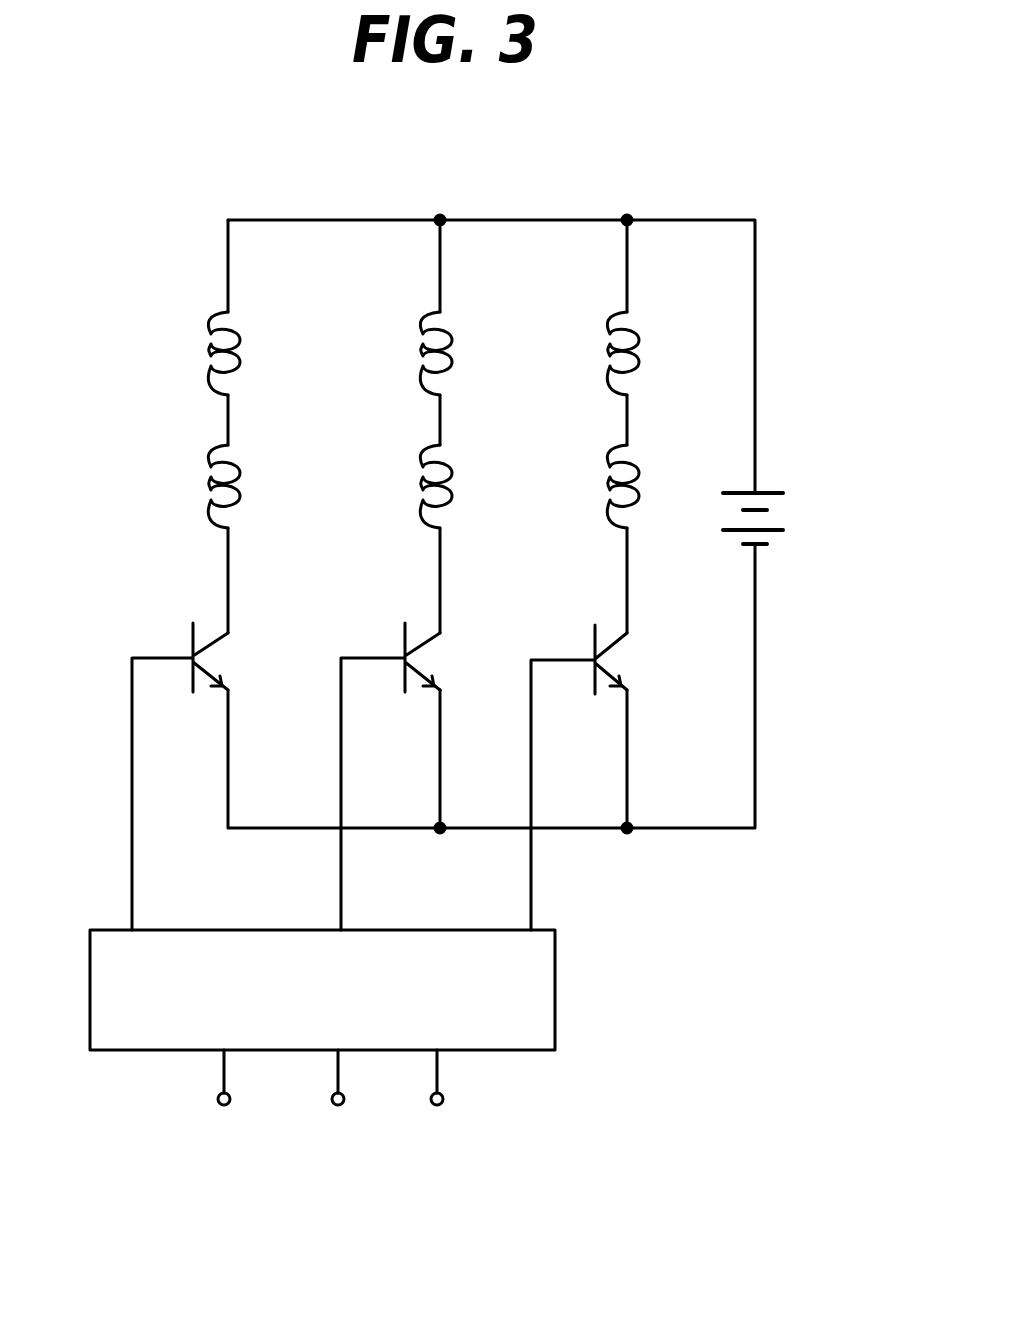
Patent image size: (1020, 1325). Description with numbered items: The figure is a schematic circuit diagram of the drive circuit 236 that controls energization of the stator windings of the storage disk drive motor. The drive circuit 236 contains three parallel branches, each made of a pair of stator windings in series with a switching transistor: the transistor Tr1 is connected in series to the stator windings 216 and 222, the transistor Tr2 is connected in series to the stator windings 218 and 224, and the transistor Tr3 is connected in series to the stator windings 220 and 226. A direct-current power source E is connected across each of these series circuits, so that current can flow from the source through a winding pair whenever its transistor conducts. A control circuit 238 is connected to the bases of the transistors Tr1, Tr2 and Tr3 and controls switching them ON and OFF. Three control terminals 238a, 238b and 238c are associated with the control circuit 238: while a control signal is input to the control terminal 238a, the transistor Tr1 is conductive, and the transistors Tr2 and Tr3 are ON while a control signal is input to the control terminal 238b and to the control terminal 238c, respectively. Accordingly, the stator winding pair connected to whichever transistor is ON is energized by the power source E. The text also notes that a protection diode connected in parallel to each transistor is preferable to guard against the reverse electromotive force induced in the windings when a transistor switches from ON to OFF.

The stator winding 216 is at (207, 353).
The stator winding 218 is at (420, 358).
The stator winding 220 is at (607, 358).
The stator winding 222 is at (207, 496).
The stator winding 224 is at (420, 496).
The stator winding 226 is at (608, 497).
The drive circuit 236 is at (768, 281).
The control circuit 238 is at (556, 993).
The control terminal 238a is at (221, 1106).
The control terminal 238b is at (336, 1106).
The control terminal 238c is at (438, 1106).
The direct-current power source E is at (771, 517).
The transistor Tr1 is at (180, 776).
The transistor Tr2 is at (390, 776).
The transistor Tr3 is at (579, 777).